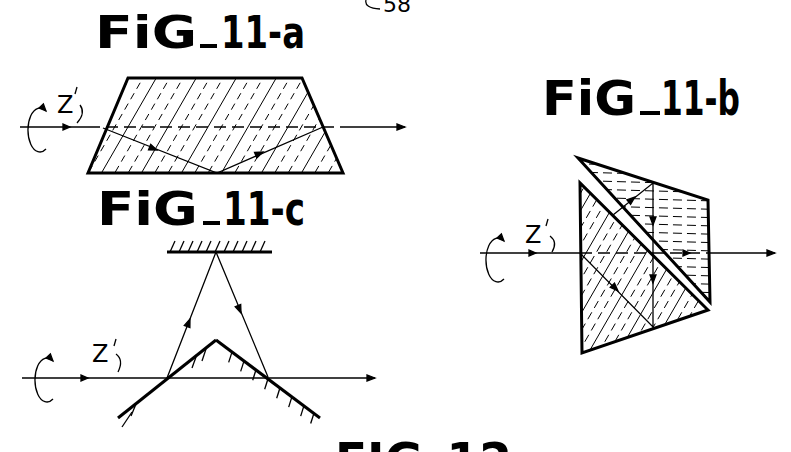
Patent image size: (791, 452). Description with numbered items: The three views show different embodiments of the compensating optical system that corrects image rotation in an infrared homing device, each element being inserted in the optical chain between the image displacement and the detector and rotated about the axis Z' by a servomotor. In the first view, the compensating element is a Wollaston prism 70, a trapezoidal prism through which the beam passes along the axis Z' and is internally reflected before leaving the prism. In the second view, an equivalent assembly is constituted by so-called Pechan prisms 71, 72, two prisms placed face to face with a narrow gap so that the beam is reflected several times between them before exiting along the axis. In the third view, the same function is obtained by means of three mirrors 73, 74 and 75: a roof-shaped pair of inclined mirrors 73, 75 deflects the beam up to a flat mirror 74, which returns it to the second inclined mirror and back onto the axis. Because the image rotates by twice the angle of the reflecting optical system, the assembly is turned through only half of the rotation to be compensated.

In FIG. 11A, the Wollaston prism 70 is at (307, 112).
In FIG. 11B, the Pechan prism 71 is at (580, 305).
In FIG. 11B, the Pechan prism 72 is at (677, 188).
In FIG. 11C, the mirror 73 is at (148, 398).
In FIG. 11C, the mirror 74 is at (248, 254).
In FIG. 11C, the mirror 75 is at (278, 398).